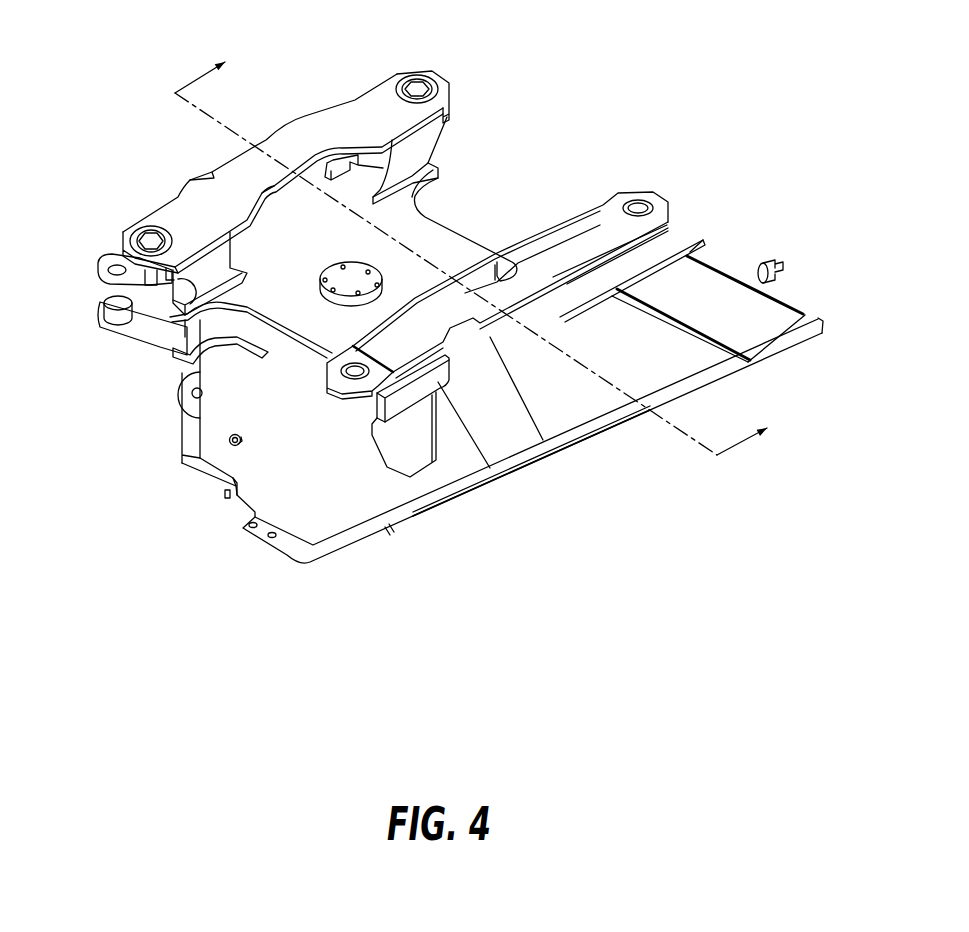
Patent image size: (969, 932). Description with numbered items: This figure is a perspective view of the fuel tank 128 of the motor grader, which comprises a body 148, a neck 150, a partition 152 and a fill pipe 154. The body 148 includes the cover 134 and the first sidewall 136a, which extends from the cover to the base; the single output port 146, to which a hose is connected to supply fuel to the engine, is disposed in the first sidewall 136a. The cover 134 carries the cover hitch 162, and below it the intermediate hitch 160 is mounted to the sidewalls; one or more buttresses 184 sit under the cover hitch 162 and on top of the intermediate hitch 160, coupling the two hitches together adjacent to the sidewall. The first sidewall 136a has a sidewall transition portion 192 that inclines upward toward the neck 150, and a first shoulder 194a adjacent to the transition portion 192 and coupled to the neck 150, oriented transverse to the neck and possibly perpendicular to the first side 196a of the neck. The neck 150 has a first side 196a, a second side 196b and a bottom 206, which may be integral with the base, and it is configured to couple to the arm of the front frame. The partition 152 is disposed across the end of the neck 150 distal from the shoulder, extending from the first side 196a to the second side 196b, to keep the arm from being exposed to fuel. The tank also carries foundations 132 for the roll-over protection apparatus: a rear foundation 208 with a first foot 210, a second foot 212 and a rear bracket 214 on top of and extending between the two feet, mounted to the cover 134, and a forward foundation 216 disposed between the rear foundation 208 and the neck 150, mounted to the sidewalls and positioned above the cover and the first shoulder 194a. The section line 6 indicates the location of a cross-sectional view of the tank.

The section line 6- 6 is at (479, 253).
The fuel tank 128 is at (517, 158).
The foundations 132 is at (395, 208).
The cover 134 is at (272, 220).
The first sidewall 136a is at (268, 485).
The output port 146 is at (233, 442).
The body 148 is at (230, 393).
The neck 150 is at (683, 408).
The partition 152 is at (697, 290).
The fill pipe 154 is at (748, 280).
The intermediate hitch 160 is at (87, 312).
The cover hitch 162 is at (87, 270).
The buttress 184 is at (188, 338).
The sidewall transition portion 192 is at (403, 487).
The first shoulder 194a is at (498, 427).
The first side 196a is at (588, 411).
The second side 196b is at (809, 302).
The bottom 206 is at (577, 435).
The rear foundation 208 is at (353, 102).
The first foot 210 is at (208, 268).
The second foot 212 is at (415, 140).
The rear bracket 214 is at (295, 140).
The forward foundation 216 is at (576, 222).